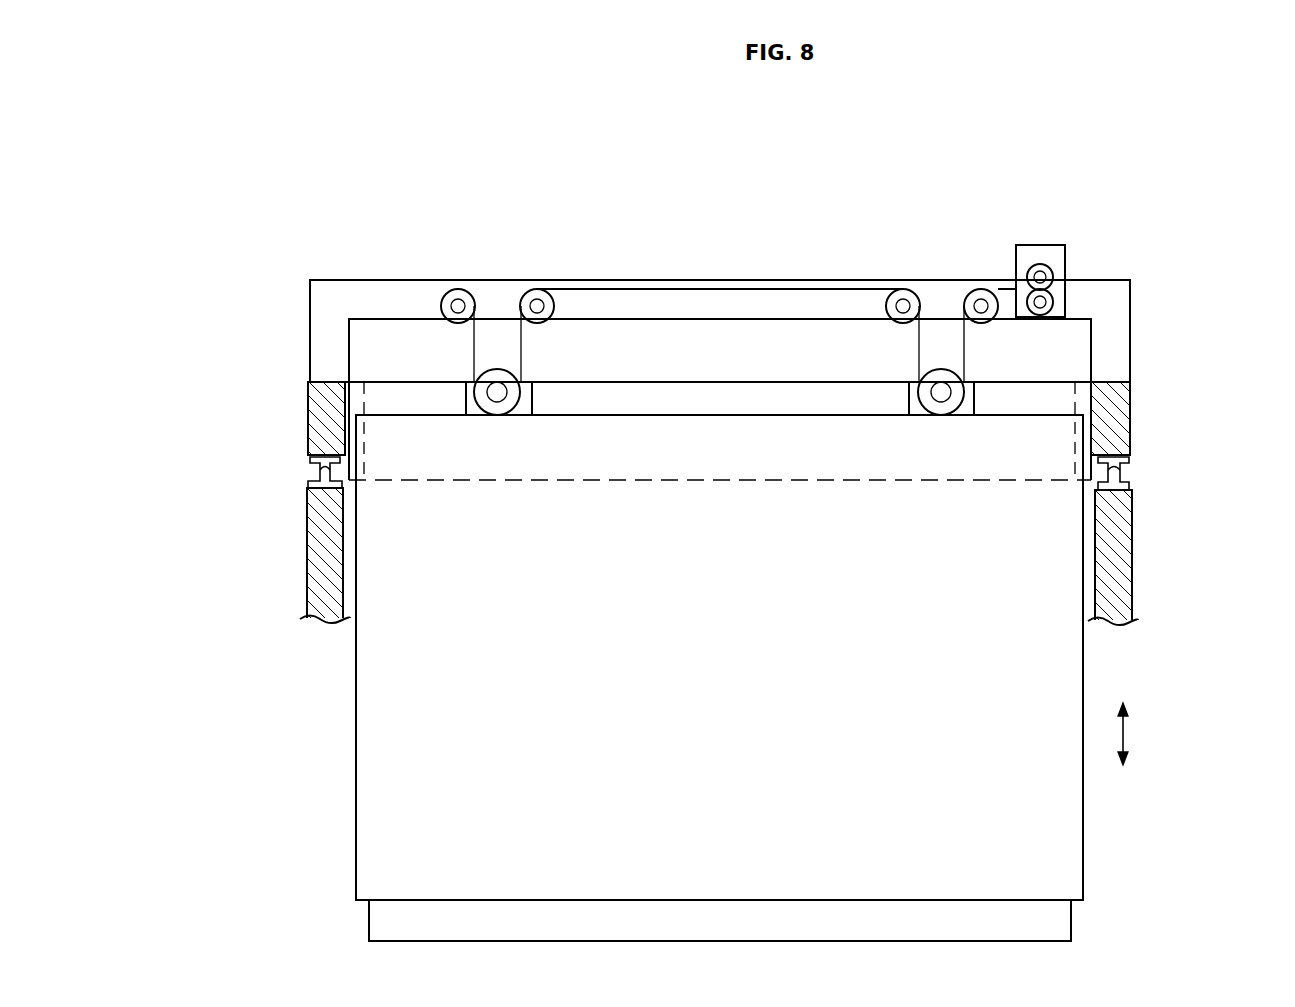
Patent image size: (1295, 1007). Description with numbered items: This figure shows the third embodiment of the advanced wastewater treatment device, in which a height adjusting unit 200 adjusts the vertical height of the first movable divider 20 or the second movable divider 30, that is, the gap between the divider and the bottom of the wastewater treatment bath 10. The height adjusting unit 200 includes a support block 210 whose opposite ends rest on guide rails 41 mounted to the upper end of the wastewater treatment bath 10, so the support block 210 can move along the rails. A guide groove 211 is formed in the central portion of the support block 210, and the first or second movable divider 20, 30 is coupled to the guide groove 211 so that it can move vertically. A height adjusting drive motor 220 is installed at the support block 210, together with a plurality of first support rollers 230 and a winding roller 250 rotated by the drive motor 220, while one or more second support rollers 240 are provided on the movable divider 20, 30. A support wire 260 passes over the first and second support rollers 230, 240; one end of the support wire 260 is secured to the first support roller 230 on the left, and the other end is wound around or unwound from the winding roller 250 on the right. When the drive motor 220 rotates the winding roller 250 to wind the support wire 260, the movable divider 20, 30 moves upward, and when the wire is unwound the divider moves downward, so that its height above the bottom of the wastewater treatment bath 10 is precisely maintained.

The height adjusting unit 200 is at (1150, 380).
The support block 210 is at (1122, 438).
The guide groove 211 is at (362, 398).
The height adjusting drive motor 220 is at (1067, 254).
The first support rollers 230 is at (458, 288).
The second support rollers 240 is at (497, 415).
The winding roller 250 is at (1047, 318).
The support wire 260 is at (695, 288).
The guide rails 41 is at (1123, 488).
The wastewater treatment bath 10 is at (1125, 566).
The first movable divider 20 is at (1053, 855).
The second movable divider 30 is at (720, 920).